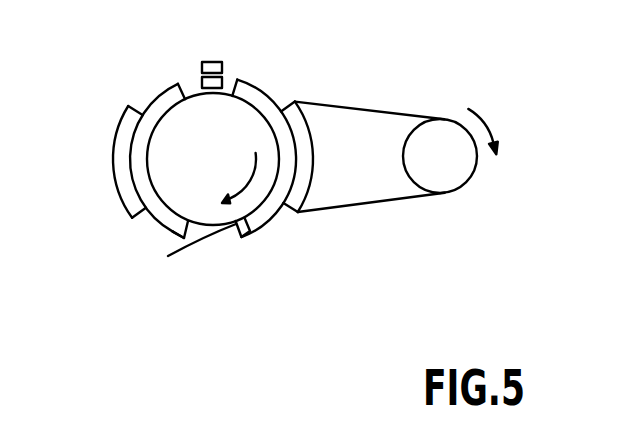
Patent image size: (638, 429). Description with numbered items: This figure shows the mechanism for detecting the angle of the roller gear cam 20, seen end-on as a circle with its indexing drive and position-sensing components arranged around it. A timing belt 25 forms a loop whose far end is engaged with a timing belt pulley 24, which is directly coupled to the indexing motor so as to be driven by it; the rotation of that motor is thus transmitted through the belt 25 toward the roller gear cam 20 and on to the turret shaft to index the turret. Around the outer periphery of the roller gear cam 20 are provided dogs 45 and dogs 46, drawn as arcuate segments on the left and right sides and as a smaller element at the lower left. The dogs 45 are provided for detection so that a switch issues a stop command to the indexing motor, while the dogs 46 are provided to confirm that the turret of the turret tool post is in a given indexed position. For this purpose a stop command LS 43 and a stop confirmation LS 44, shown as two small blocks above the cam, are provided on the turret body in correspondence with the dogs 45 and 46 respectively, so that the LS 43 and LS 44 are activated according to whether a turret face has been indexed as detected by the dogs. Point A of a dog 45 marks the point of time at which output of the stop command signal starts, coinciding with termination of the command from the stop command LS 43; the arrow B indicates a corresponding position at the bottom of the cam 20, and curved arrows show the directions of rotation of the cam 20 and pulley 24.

The roller gear cam 20 is at (213, 159).
The timing belt pulley 24 is at (438, 177).
The timing belt 25 is at (382, 111).
The stop command LS 43 is at (209, 61).
The stop confirmation LS 44 is at (222, 82).
The dogs 45 is at (118, 121).
The dogs 46 is at (168, 224).
The point A of dog A is at (117, 236).
The direction B is at (210, 252).